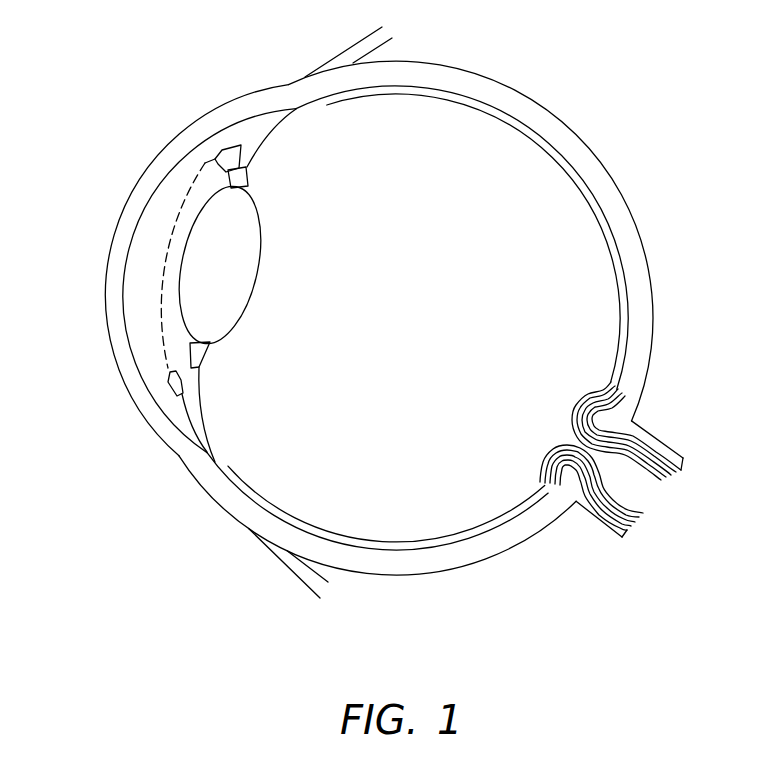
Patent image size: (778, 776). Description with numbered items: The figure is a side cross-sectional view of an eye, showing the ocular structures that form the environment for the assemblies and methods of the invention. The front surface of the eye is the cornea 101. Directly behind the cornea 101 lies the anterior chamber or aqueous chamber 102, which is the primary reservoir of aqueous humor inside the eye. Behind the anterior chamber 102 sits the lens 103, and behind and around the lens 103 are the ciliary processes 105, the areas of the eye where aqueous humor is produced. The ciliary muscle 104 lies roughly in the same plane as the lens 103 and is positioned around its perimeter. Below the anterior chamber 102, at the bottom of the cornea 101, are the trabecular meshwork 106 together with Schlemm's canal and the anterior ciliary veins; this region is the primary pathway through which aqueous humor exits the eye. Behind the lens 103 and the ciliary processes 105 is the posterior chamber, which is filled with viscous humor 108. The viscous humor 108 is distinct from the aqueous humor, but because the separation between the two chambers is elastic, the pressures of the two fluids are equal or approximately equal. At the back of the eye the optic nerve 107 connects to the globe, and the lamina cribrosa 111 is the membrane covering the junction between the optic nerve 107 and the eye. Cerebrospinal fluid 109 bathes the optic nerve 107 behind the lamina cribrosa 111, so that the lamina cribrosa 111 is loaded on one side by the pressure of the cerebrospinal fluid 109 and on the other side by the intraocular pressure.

The cornea 101 is at (110, 290).
The anterior chamber 102 is at (188, 187).
The lens 103 is at (207, 263).
The ciliary muscle 104 is at (197, 392).
The ciliary processes 105 is at (219, 267).
The trabecular meshwork 106 is at (176, 438).
The optic nerve 107 is at (613, 520).
The viscous humor 108 is at (468, 162).
The cerebrospinal fluid 109 is at (662, 440).
The lamina cribrosa 111 is at (548, 439).